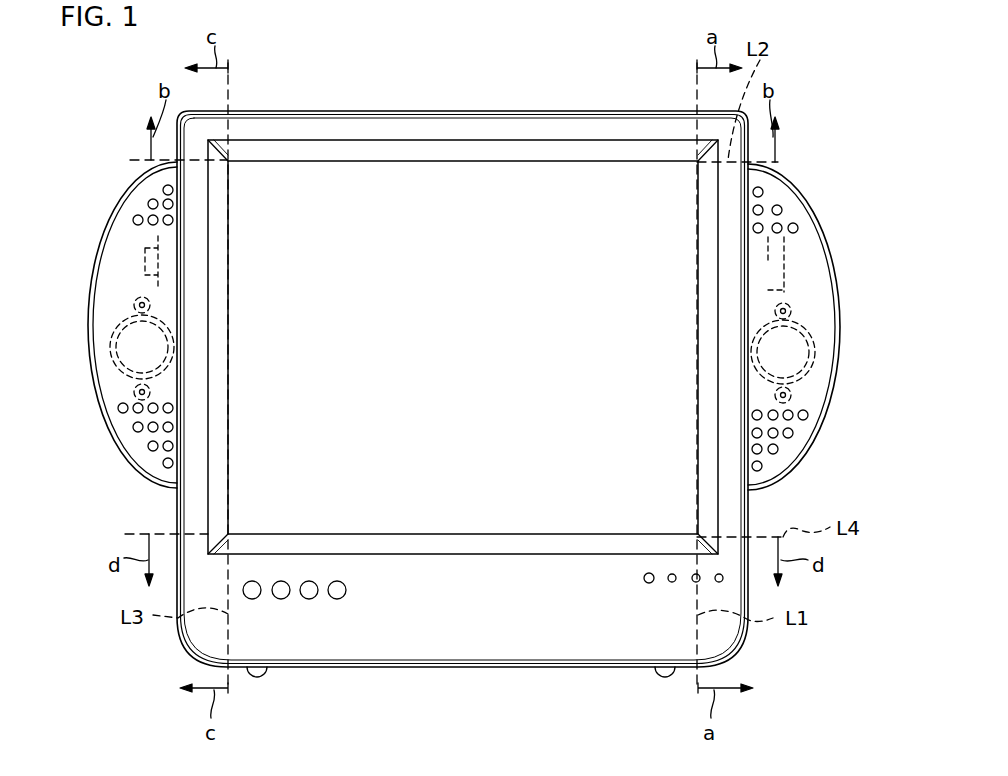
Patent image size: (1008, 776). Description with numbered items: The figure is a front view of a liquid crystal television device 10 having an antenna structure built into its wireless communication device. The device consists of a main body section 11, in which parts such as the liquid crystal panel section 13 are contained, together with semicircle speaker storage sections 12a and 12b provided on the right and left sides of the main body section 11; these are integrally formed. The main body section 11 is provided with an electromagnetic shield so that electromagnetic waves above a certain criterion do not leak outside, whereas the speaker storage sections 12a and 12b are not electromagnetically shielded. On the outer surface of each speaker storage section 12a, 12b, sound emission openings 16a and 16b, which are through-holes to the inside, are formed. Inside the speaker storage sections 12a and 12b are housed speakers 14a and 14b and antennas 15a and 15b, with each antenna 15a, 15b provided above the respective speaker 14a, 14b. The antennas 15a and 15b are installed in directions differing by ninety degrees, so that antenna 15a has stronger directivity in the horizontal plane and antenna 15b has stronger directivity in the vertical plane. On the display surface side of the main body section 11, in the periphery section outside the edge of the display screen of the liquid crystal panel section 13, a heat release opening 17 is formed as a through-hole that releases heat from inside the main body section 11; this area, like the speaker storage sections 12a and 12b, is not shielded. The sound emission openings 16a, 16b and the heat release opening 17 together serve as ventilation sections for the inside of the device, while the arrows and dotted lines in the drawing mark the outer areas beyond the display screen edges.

The liquid crystal television device 10 is at (447, 103).
The main body section 11 is at (558, 120).
The speaker storage section 12a is at (779, 188).
The speaker storage section 12b is at (150, 186).
The liquid crystal panel section 13 is at (330, 182).
The speaker 14a is at (807, 332).
The speaker 14b is at (132, 372).
The antenna 15a is at (788, 250).
The antenna 15b is at (148, 248).
The sound emission opening 16a is at (793, 437).
The sound emission opening 16b is at (165, 470).
The heat release opening 17 is at (290, 598).